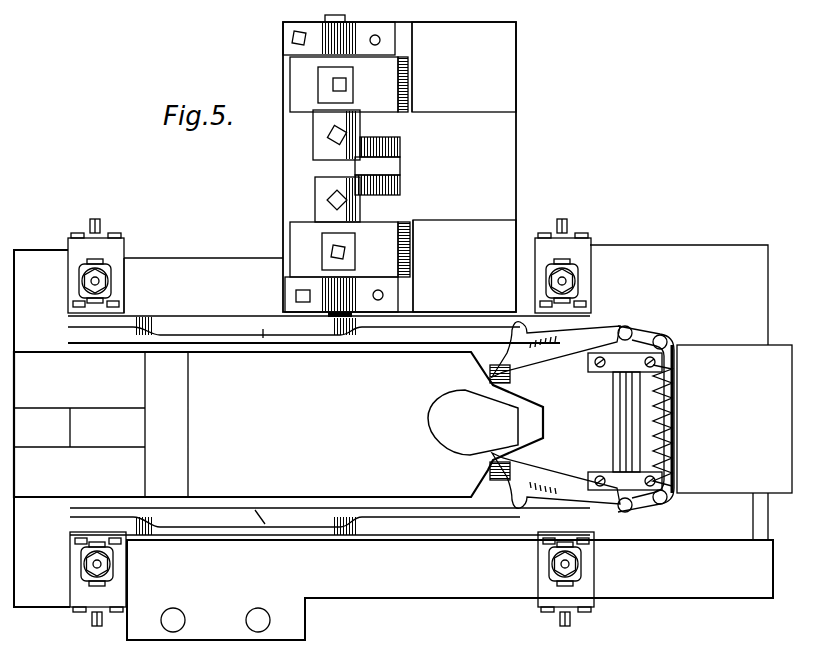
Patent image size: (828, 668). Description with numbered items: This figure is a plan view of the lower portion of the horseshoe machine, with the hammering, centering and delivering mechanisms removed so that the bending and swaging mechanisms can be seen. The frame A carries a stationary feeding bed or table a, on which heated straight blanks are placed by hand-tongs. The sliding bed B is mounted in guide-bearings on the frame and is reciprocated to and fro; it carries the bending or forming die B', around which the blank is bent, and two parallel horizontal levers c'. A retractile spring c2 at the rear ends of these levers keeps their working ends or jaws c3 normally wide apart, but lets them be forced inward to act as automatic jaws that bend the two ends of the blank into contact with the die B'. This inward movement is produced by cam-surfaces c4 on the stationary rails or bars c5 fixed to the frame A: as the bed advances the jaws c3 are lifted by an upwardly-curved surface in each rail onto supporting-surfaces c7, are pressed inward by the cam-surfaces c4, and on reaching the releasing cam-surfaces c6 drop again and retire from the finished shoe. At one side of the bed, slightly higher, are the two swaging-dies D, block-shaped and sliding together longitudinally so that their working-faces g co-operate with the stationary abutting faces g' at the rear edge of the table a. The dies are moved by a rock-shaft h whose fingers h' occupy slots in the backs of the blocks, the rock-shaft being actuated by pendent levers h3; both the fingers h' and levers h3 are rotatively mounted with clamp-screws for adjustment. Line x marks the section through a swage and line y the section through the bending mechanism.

The frame A is at (393, 429).
The sliding bed B is at (278, 424).
The bending or forming die B' is at (473, 422).
The feeding bed or table a is at (399, 167).
The swaging-dies D is at (344, 167).
The working-faces of the swaging-dies g is at (396, 167).
The stationary abutting faces g' is at (420, 167).
The rock-shaft h is at (340, 156).
The fingers h' is at (336, 168).
The pendent levers h3 is at (377, 166).
The horizontal levers c' is at (642, 417).
The retractile spring c2 is at (656, 425).
The working ends or jaws c3 is at (520, 463).
The cam-surfaces c4 is at (422, 423).
The stationary rails or bars c5 is at (250, 424).
The releasing cam-surfaces c6 is at (354, 425).
The supporting-surfaces c7 is at (266, 425).
The section line x is at (525, 249).
The section line y is at (458, 583).